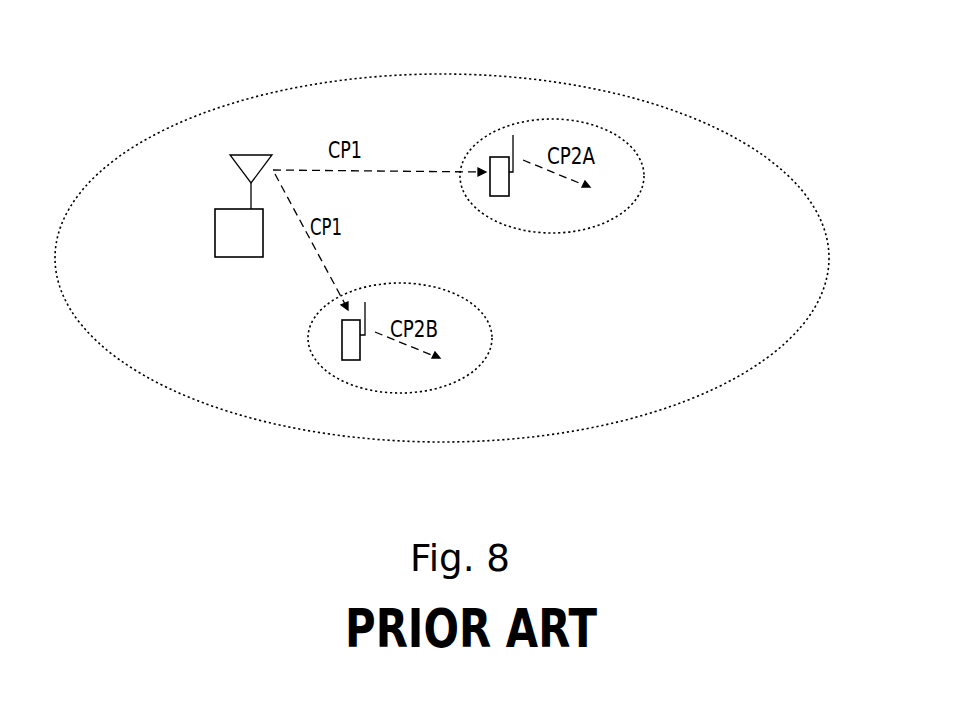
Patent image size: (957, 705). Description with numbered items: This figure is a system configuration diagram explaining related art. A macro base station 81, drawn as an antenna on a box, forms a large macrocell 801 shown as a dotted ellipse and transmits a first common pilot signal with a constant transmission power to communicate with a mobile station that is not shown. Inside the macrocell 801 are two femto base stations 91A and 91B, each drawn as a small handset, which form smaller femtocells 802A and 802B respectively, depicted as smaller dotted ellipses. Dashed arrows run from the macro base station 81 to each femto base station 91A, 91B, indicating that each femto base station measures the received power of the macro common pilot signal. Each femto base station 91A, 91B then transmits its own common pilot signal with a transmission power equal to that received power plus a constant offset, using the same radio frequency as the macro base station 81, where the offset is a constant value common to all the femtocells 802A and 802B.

The macrocell 801 is at (437, 73).
The macro base station 81 is at (215, 212).
The femto base station 91A is at (490, 157).
The femto base station 91B is at (342, 345).
The femtocell 802A is at (643, 183).
The femtocell 802B is at (493, 340).